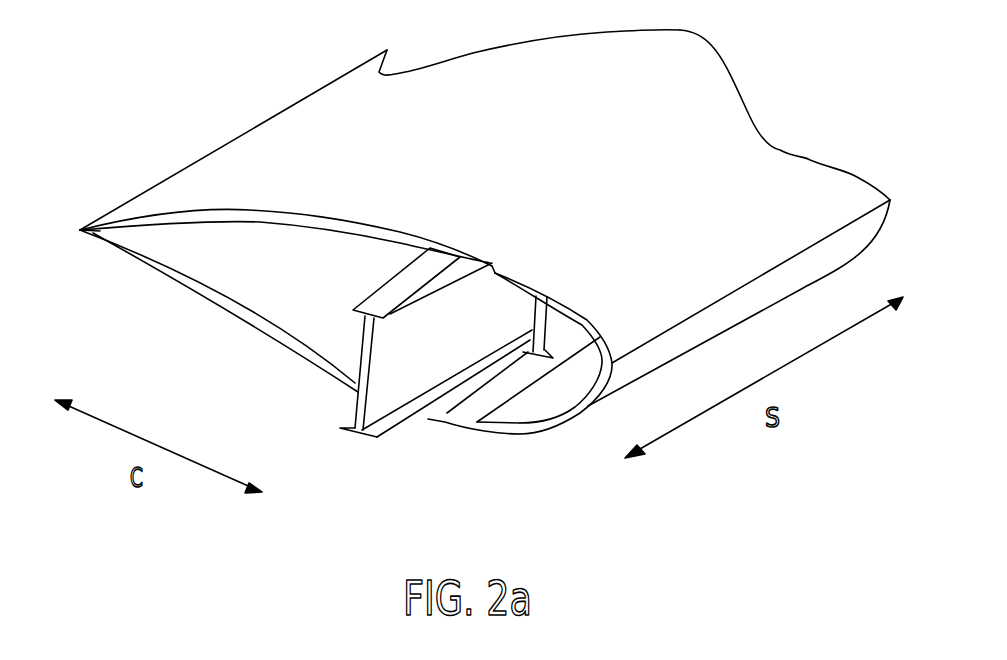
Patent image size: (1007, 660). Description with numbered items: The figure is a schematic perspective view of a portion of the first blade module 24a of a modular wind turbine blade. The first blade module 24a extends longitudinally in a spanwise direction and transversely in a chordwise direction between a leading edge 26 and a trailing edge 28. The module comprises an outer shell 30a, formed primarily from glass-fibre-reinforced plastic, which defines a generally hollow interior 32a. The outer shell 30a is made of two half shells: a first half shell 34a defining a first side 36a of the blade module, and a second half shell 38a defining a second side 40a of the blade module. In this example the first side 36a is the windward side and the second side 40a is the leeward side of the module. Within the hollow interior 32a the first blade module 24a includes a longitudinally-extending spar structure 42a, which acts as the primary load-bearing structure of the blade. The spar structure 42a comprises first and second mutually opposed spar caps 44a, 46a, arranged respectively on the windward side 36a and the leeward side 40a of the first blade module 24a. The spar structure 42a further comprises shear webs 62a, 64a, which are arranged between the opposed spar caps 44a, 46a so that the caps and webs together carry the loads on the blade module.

The first blade module 24a is at (140, 76).
The trailing edge 28 is at (282, 110).
The second side 40a is at (728, 76).
The second half shell 38a is at (810, 197).
The leading edge 26 is at (770, 273).
The hollow interior 32a is at (295, 282).
The outer shell 30a is at (160, 314).
The first side 36a is at (246, 338).
The first half shell 34a is at (335, 345).
The shear web 62a is at (390, 375).
The second spar cap 46a is at (505, 228).
The shear web 64a is at (560, 323).
The spar structure 42a is at (478, 458).
The first spar cap 44a is at (431, 448).